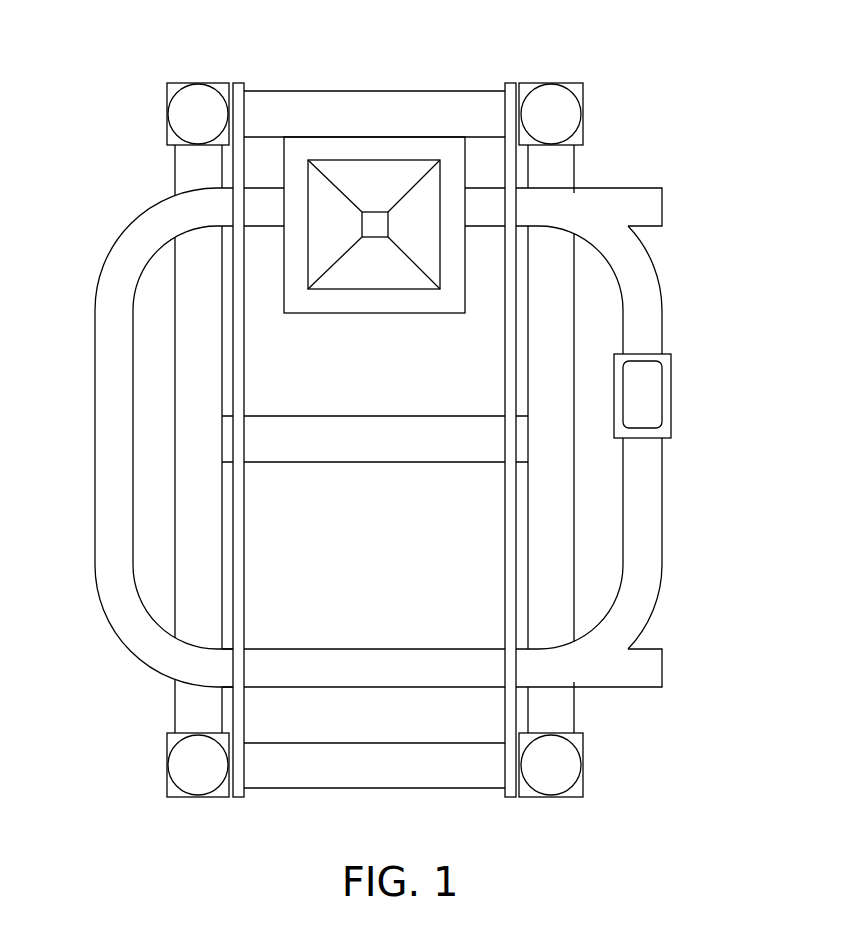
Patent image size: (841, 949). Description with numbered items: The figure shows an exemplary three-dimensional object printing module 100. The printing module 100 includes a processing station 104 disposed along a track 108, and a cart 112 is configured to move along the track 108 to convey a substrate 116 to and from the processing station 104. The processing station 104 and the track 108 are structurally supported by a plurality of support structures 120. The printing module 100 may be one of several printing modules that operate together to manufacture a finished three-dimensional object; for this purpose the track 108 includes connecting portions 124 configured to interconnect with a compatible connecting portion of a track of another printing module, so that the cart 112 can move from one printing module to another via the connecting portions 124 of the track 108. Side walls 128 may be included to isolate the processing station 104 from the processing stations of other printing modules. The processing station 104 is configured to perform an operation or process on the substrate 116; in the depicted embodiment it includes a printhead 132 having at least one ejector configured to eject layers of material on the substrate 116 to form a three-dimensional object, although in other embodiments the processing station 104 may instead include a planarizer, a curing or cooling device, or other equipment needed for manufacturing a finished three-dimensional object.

The three-dimensional object printing module 100 is at (128, 55).
The processing station 104 is at (331, 318).
The track 108 is at (120, 263).
The cart 112 is at (668, 432).
The substrate 116 is at (662, 380).
The support structures 120 is at (376, 89).
The connecting portions 124 is at (662, 205).
The side walls 128 is at (245, 572).
The printhead 132 is at (397, 270).